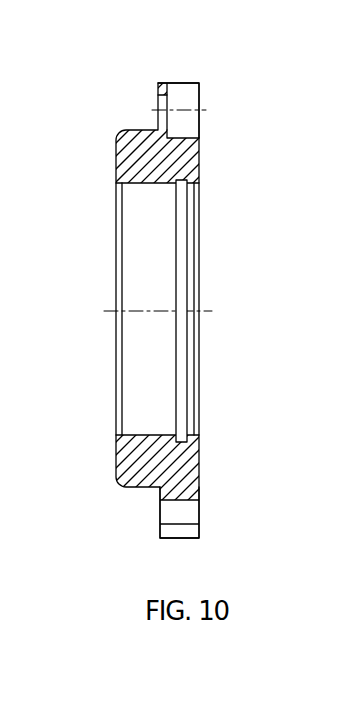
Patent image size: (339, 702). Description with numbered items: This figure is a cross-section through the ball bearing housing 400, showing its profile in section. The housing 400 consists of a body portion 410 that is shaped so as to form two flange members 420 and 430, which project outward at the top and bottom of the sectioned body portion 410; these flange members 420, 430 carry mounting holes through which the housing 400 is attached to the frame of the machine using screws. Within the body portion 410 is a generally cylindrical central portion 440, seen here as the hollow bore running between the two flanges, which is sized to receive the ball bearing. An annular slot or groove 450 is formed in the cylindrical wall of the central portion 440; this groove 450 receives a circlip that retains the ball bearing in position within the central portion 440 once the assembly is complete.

The housing 400 is at (213, 141).
The body portion 410 is at (125, 152).
The flange member 420 is at (157, 82).
The flange member 430 is at (158, 513).
The central portion 440 is at (150, 293).
The annular slot or groove 450 is at (185, 306).